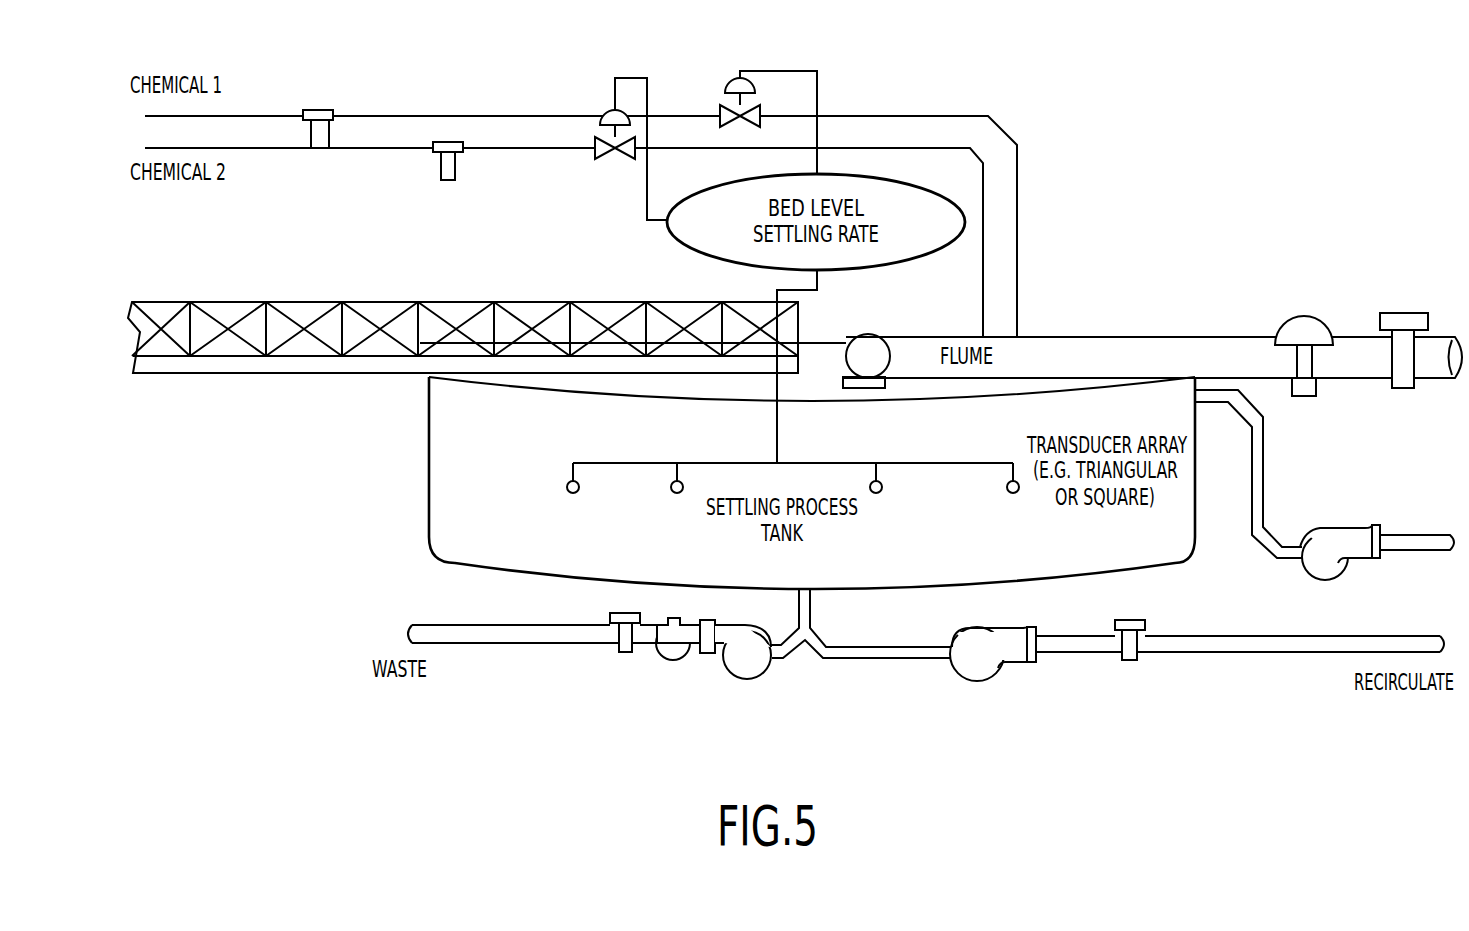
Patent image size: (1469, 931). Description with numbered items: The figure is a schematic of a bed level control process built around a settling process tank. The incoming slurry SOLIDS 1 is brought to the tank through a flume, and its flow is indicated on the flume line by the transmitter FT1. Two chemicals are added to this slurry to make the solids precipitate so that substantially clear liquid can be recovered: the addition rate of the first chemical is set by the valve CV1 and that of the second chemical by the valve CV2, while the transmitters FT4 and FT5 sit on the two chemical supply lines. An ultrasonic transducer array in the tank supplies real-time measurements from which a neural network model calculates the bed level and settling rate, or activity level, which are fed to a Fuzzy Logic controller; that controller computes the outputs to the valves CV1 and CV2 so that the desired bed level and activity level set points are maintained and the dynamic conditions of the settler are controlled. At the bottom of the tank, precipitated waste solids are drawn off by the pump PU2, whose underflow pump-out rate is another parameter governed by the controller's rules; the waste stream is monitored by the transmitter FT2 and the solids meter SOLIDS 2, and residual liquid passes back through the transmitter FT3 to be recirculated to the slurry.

The flume flow transmitter FT1 is at (1304, 318).
The waste flow transmitter FT2 is at (625, 652).
The recirculate flow transmitter FT3 is at (1130, 660).
The chemical 1 flow transmitter FT4 is at (320, 110).
The chemical 2 flow transmitter FT5 is at (448, 142).
The valve CV1 is at (752, 119).
The valve CV2 is at (611, 149).
The pump PU2 is at (757, 662).
The slurry of solids 1 SOLIDS 1 is at (1403, 313).
The waste solids meter SOLIDS 2 is at (674, 657).